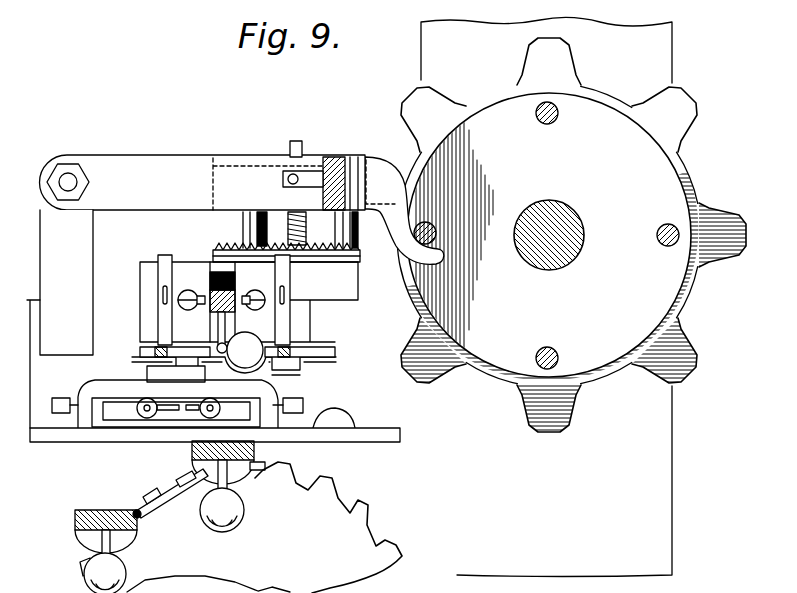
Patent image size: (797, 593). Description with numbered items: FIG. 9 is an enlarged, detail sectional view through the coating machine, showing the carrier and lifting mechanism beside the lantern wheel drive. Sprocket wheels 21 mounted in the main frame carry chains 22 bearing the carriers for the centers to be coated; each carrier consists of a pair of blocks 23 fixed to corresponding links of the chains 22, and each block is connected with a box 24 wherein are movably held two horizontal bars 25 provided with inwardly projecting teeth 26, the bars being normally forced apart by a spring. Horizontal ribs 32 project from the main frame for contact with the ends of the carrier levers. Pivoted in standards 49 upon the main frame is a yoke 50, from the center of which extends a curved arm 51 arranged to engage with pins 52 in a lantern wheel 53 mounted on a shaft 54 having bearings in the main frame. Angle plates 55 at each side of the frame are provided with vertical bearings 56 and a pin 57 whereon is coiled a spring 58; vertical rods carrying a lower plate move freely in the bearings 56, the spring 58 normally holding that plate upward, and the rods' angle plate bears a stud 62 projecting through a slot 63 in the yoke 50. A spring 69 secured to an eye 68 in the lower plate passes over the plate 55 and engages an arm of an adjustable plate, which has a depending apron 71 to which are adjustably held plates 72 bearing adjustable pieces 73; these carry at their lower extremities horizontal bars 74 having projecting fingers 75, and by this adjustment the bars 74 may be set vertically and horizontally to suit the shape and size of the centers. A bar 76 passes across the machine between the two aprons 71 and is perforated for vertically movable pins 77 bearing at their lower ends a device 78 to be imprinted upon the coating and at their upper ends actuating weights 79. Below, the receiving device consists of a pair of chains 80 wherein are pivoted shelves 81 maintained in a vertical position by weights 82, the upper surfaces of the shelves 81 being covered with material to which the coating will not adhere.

The sprocket wheels 21 is at (690, 356).
The chains 22 is at (262, 372).
The blocks 23 is at (147, 368).
The box 24 is at (160, 428).
The horizontal bars 25 is at (146, 412).
The teeth 26 is at (178, 427).
The horizontal ribs 32 is at (322, 416).
The standards 49 is at (66, 282).
The yoke 50 is at (202, 182).
The curved arm 51 is at (404, 210).
The pins 52 is at (536, 114).
The lantern wheel 53 is at (682, 182).
The shaft 54 is at (570, 226).
The angle plates 55 is at (249, 302).
The vertical bearings 56 is at (332, 228).
The pin 57 is at (298, 141).
The spring 58 is at (285, 227).
The stud 62 is at (295, 173).
The slot 63 is at (318, 178).
The eye 68 is at (213, 247).
The spring 69 is at (250, 302).
The depending apron 71 is at (218, 268).
The plates 72 is at (222, 310).
The adjustable pieces 73 is at (160, 306).
The horizontal bars 74 is at (160, 351).
The fingers 75 is at (185, 368).
The bar 76 is at (160, 291).
The pins 77 is at (340, 347).
The device 78 is at (216, 349).
The actuating weights 79 is at (207, 302).
The chains 80 is at (140, 508).
The shelves 81 is at (252, 460).
The weights 82 is at (118, 573).